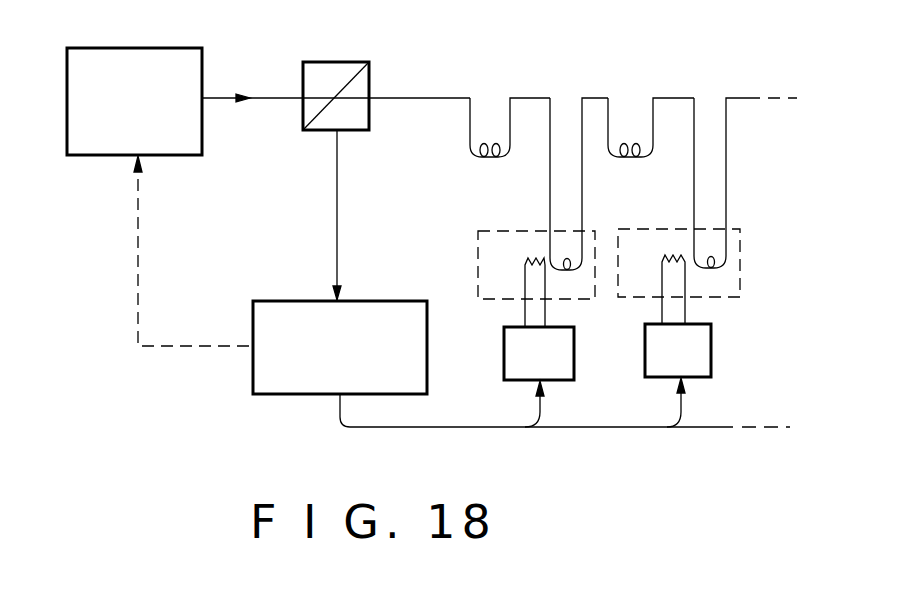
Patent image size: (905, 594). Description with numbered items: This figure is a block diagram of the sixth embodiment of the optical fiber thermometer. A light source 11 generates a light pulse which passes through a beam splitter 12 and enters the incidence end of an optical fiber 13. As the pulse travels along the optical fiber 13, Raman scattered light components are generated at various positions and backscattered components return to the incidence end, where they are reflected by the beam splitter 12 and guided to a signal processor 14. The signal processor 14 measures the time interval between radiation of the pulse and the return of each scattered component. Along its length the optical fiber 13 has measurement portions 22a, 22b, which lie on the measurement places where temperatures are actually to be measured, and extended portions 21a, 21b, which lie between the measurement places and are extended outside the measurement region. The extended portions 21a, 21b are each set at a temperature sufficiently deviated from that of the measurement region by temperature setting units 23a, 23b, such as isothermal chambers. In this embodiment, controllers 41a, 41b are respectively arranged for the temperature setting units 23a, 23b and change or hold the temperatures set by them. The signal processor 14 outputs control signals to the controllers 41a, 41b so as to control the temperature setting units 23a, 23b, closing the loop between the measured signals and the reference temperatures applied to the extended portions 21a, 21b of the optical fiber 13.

The light source 11 is at (203, 58).
The beam splitter 12 is at (372, 62).
The optical fiber 13 is at (415, 100).
The signal processor 14 is at (290, 300).
The extended portion 21a is at (565, 250).
The extended portion 21b is at (708, 250).
The measurement portion 22a is at (493, 132).
The measurement portion 22b is at (631, 132).
The temperature setting unit 23a is at (478, 258).
The temperature setting unit 23b is at (740, 257).
The controller 41a is at (565, 380).
The controller 41b is at (707, 377).